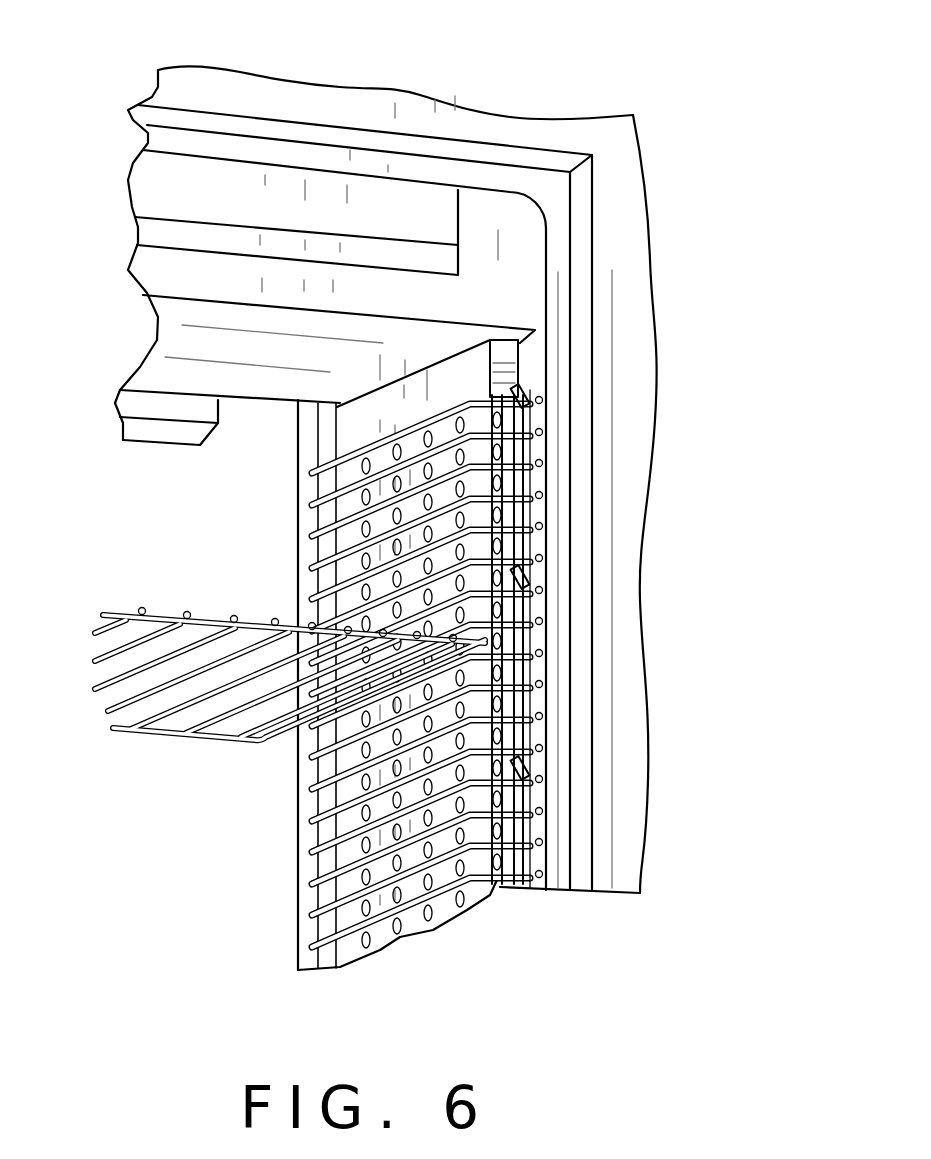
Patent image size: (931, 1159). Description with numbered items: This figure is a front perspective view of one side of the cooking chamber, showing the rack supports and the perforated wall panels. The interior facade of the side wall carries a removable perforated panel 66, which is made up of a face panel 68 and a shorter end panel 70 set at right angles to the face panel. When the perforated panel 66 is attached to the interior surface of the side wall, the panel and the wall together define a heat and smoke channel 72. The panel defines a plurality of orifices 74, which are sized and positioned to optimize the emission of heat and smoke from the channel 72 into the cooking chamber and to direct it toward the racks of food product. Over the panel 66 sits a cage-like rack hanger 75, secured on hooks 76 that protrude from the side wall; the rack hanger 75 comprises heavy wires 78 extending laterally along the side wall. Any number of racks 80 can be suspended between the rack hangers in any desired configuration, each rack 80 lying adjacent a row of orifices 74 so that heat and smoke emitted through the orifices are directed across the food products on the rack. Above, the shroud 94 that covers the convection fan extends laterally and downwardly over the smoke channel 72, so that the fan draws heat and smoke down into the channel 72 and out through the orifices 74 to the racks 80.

The shroud 94 is at (477, 208).
The end panel 70 is at (510, 363).
The face panel 68 is at (452, 493).
The rack hanger 75 is at (497, 538).
The heat and smoke channel 72 is at (447, 683).
The perforated panel 66 is at (466, 736).
The orifice 74 is at (462, 767).
The hook 76 is at (529, 774).
The heavy wire 78 is at (345, 804).
The rack 80 is at (198, 622).